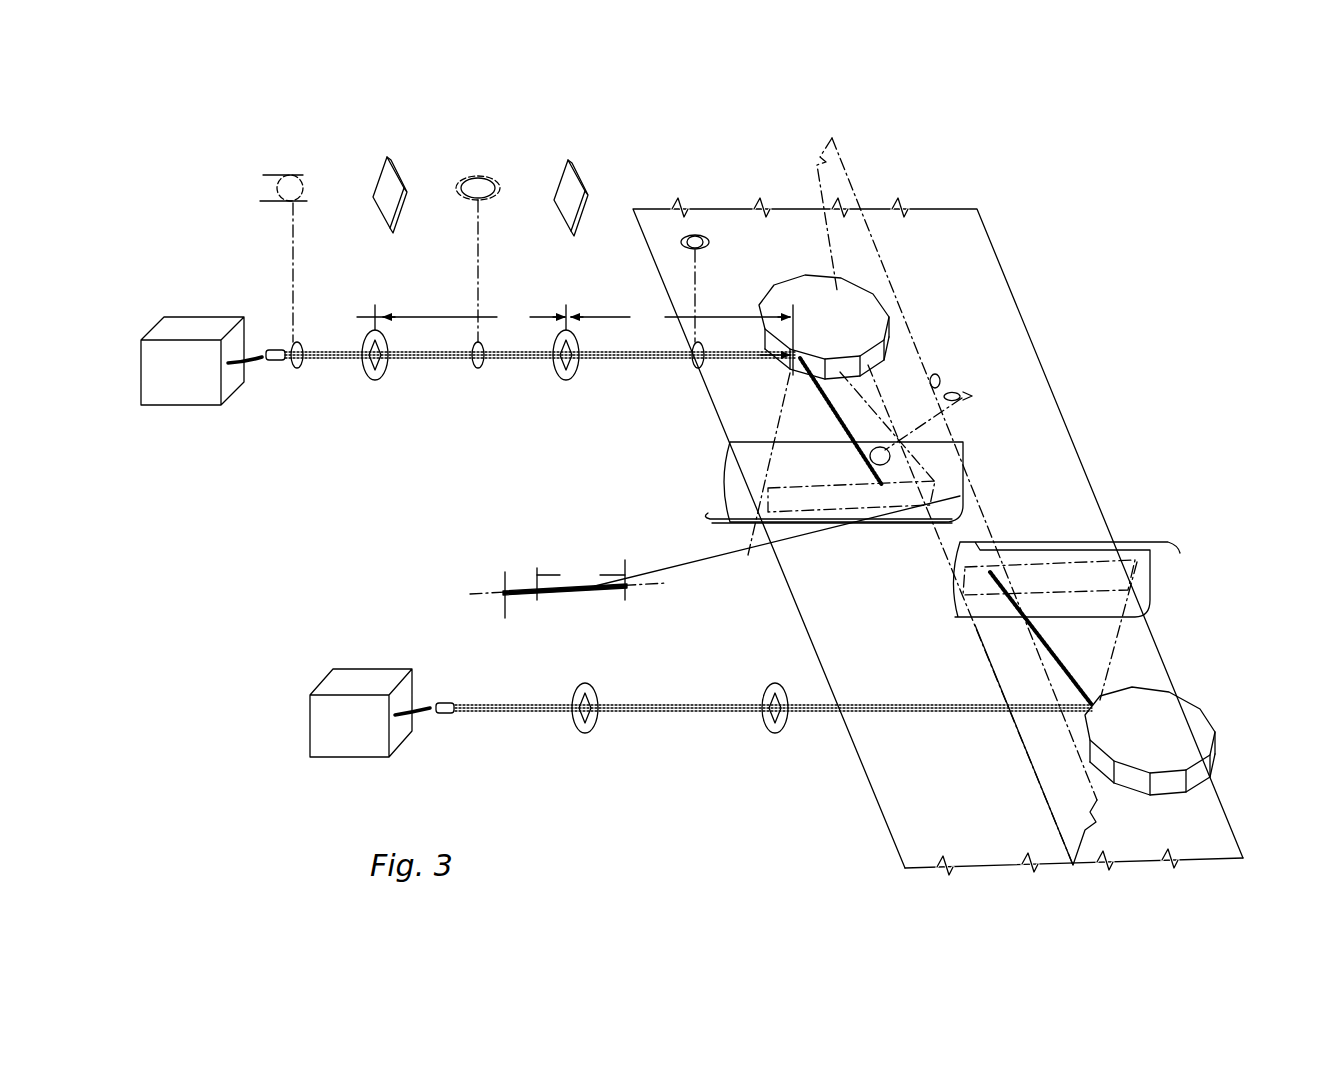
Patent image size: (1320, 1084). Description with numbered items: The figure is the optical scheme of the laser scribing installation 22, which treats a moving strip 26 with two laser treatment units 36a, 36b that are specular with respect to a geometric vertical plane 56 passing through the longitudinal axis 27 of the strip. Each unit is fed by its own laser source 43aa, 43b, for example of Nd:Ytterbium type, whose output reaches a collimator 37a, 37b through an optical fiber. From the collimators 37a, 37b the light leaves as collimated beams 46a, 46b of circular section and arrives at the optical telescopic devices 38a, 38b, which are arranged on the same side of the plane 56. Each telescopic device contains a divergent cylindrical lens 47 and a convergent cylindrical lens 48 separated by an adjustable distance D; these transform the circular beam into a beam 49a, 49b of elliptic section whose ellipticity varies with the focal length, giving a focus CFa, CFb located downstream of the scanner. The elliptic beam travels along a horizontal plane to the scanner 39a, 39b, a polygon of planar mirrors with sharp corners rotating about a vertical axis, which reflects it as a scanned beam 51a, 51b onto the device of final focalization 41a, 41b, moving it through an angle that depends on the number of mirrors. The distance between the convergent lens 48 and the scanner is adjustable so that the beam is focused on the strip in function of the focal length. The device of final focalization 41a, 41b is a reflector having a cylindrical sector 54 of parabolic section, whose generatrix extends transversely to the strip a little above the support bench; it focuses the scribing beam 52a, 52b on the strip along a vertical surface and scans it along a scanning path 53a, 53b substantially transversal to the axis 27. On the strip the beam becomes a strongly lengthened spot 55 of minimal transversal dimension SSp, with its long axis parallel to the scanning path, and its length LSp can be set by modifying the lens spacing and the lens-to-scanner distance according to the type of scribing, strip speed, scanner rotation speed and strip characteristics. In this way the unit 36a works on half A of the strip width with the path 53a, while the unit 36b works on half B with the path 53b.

The laser scribing installation 22 is at (1125, 262).
The strip 26 is at (1048, 387).
The longitudinal axis 27 is at (825, 236).
The first treatment unit 36a is at (620, 278).
The second treatment unit 36b is at (843, 792).
The first collimator 37a is at (280, 370).
The second collimator 37b is at (441, 724).
The first optical telescopic device 38a is at (447, 302).
The second optical telescopic device 38b is at (655, 765).
The first scanner 39a is at (872, 284).
The second scanner 39b is at (1228, 719).
The first device of final focalization 41a is at (700, 476).
The second device of final focalization 41b is at (1206, 579).
The first laser source 43aa is at (205, 303).
The second laser source 43b is at (313, 670).
The first collimated beam 46a is at (326, 350).
The second collimated beam 46b is at (517, 715).
The divergent cylindrical lens 47 is at (382, 345).
The convergent cylindrical lens 48 is at (572, 347).
The first elliptic-section beam 49a is at (736, 362).
The second elliptic-section beam 49b is at (925, 716).
The first scanned beam 51a is at (860, 450).
The second scanned beam 51b is at (1008, 598).
The first scribing beam 52a is at (875, 494).
The second scribing beam 52b is at (985, 590).
The first scanning path 53a is at (768, 522).
The second scanning path 53b is at (1150, 597).
The cylindrical sector 54 is at (712, 518).
The spot 55 is at (612, 596).
The geometric vertical plane 56 is at (936, 372).
The first focus CFa is at (878, 446).
The second focus CFb is at (1030, 618).
The transversal spot dimension SSp is at (496, 555).
The spot length LSp is at (581, 574).